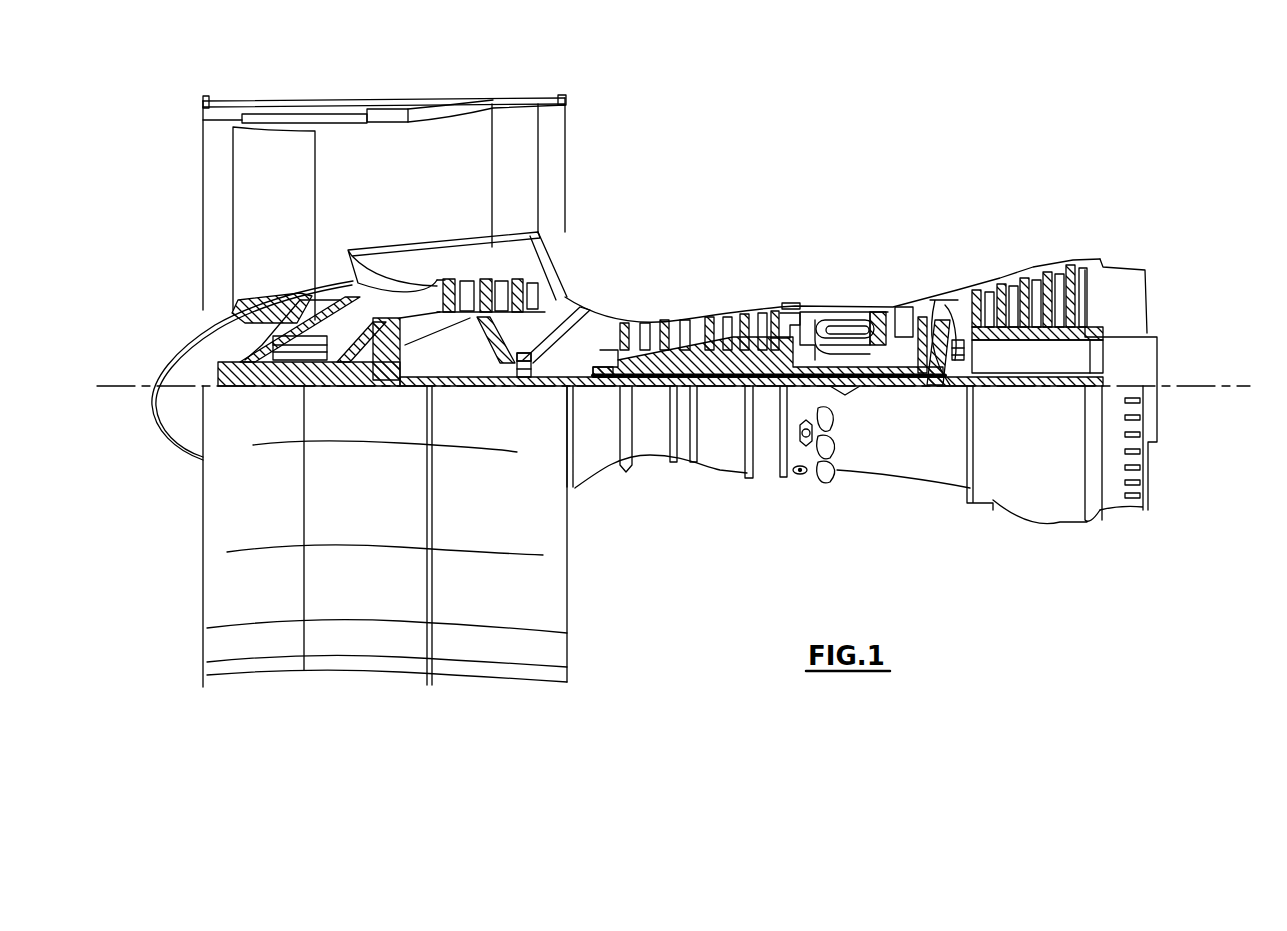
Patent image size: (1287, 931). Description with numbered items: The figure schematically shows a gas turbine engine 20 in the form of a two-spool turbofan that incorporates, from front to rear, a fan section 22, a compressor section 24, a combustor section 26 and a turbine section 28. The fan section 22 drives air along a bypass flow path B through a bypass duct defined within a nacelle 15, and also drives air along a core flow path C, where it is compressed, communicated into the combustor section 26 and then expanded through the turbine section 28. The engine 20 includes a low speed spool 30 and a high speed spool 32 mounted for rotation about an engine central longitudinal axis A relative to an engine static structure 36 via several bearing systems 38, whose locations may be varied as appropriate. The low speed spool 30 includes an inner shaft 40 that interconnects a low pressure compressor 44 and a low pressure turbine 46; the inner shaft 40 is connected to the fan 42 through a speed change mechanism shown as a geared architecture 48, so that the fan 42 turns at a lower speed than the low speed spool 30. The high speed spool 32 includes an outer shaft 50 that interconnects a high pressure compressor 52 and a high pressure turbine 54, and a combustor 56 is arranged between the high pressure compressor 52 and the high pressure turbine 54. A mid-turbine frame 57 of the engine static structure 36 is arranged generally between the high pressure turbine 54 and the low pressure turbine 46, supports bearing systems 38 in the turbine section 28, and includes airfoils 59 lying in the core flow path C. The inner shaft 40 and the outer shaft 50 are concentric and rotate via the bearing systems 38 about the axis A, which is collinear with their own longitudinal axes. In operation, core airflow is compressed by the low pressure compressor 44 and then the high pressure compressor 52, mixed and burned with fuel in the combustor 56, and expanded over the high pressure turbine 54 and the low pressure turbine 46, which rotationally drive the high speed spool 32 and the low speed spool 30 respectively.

The gas turbine engine 20 is at (855, 145).
The fan section 22 is at (316, 90).
The nacelle 15 is at (387, 108).
The fan 42 is at (289, 232).
The compressor section 24 is at (616, 282).
The combustor section 26 is at (840, 275).
The turbine section 28 is at (985, 237).
The low speed spool 30 is at (723, 398).
The high speed spool 32 is at (768, 338).
The engine static structure 36 is at (765, 485).
The bearing systems 38 is at (523, 375).
The inner shaft 40 is at (585, 390).
The low pressure compressor 44 is at (490, 293).
The low pressure turbine 46 is at (1033, 280).
The geared architecture 48 is at (391, 370).
The outer shaft 50 is at (850, 386).
The high pressure compressor 52 is at (685, 330).
The high pressure turbine 54 is at (902, 305).
The combustor 56 is at (837, 330).
The mid-turbine frame 57 is at (948, 290).
The airfoils 59 is at (975, 350).
The engine central longitudinal axis A is at (1238, 386).
The bypass flow path B is at (340, 178).
The core flow path C is at (385, 285).